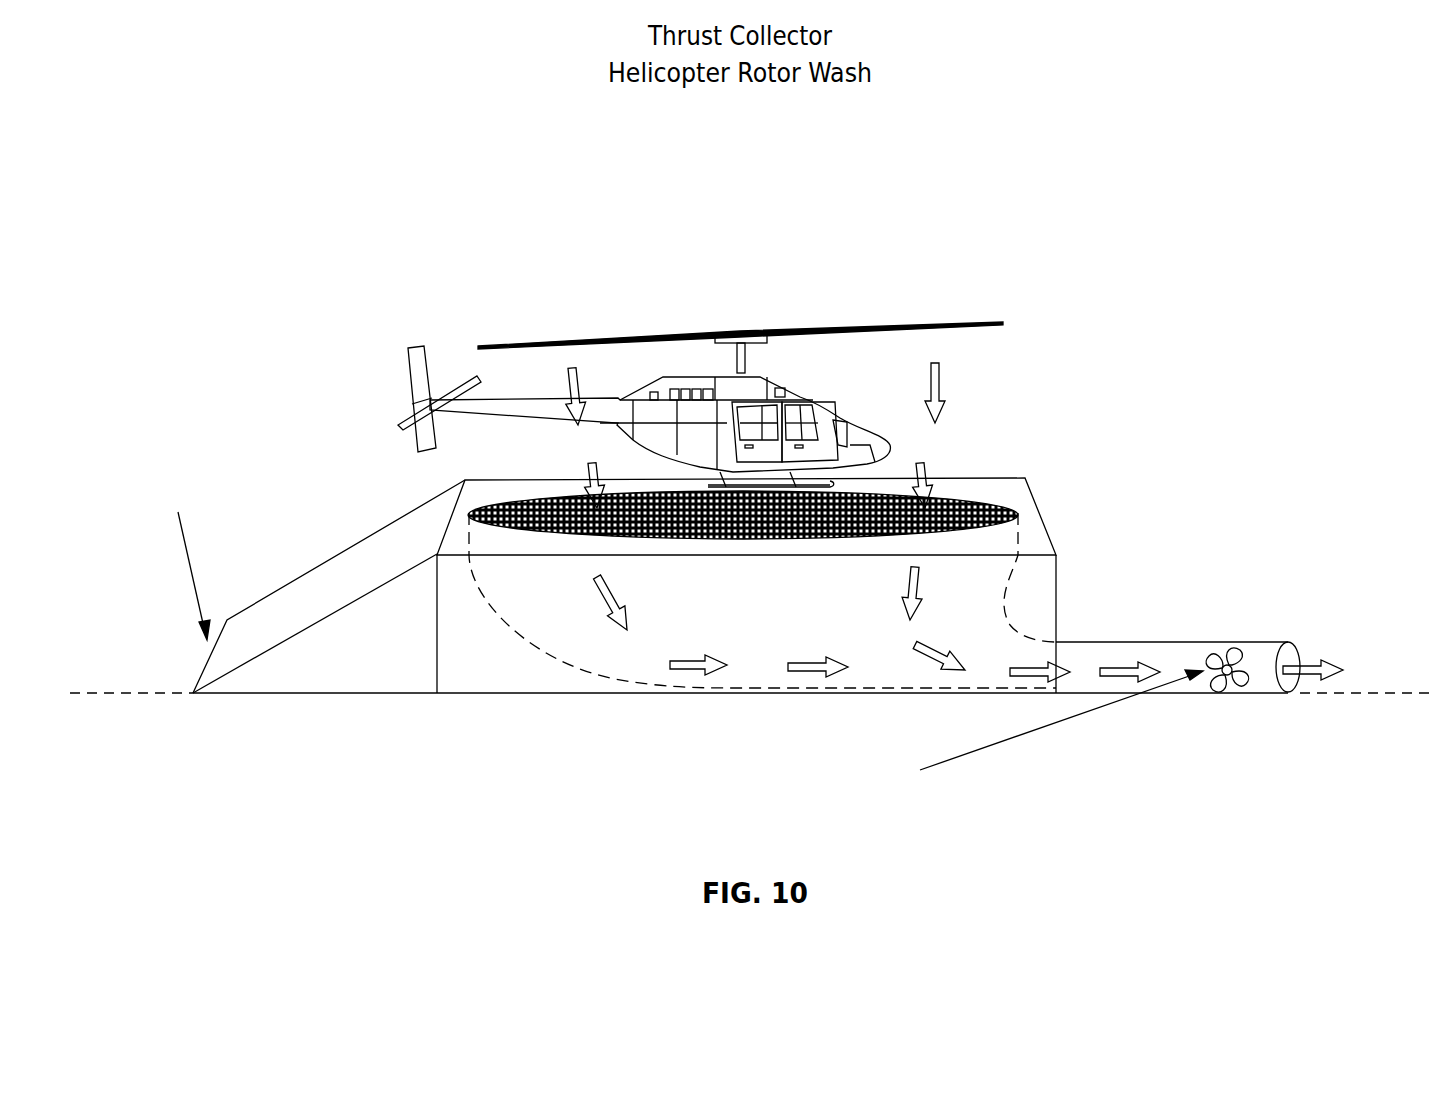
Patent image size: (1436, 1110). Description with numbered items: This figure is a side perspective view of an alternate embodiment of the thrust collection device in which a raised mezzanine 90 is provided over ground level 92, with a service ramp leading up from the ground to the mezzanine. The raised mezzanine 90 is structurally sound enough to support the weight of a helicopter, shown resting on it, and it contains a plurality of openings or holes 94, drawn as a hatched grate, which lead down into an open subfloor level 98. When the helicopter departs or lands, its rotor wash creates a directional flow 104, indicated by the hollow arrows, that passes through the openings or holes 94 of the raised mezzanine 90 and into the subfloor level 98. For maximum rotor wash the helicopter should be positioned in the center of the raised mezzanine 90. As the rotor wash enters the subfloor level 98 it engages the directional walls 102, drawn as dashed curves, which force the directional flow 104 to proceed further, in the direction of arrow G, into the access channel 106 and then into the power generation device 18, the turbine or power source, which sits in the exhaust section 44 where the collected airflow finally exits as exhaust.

The ground level 92 is at (188, 733).
The openings or holes 94 is at (950, 500).
The raised mezzanine 90 is at (1006, 495).
The directional walls 102 is at (1022, 565).
The subfloor level 98 is at (936, 612).
The access channel 106 is at (1085, 660).
The exhaust section 44 is at (1395, 660).
The directional flow 104 is at (688, 663).
The power generation device 18 is at (768, 778).